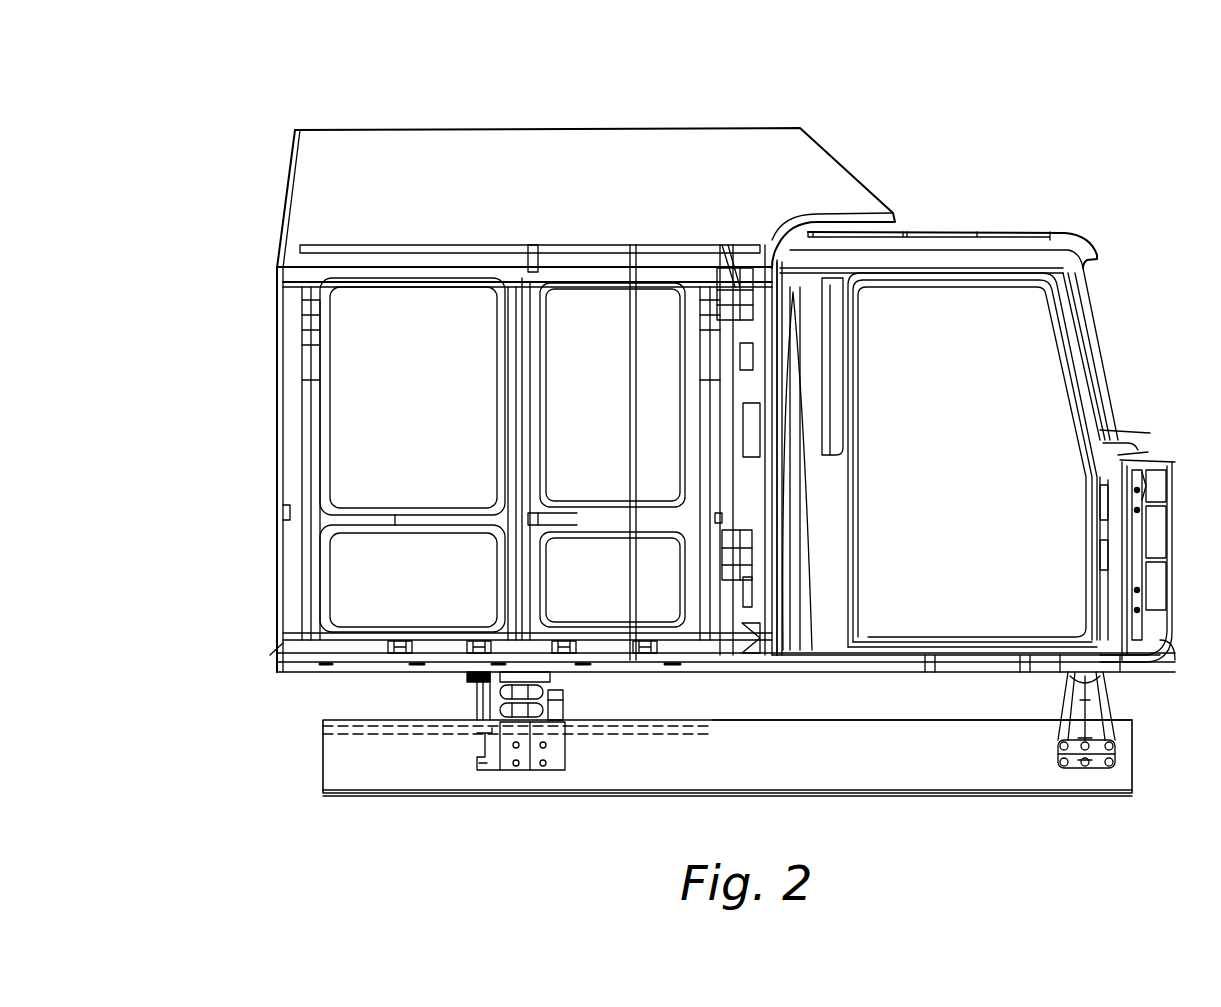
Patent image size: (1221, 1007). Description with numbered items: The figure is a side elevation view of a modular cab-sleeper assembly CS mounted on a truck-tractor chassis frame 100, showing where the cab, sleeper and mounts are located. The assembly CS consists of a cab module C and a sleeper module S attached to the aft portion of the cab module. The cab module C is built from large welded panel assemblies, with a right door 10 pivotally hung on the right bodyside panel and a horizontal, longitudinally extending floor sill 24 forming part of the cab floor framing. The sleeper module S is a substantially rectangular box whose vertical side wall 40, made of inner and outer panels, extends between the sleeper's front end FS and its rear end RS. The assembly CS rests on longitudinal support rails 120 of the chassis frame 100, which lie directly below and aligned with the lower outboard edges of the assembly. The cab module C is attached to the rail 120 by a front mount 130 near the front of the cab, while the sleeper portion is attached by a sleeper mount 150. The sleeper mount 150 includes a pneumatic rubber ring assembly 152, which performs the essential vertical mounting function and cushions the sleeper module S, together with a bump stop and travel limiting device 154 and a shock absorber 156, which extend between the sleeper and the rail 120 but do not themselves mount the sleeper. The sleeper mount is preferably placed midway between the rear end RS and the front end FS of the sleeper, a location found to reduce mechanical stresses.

The right door 10 is at (1176, 565).
The floor sills 24 is at (955, 660).
The side walls 40 is at (600, 392).
The chassis frame 100 is at (283, 827).
The support rails 120 is at (940, 782).
The front mount 130 is at (1103, 680).
The sleeper mount 150 is at (471, 744).
The pneumatic rubber ring assembly 152 is at (540, 712).
The bump stop and travel limiting device 154 is at (565, 678).
The shock absorber 156 is at (477, 700).
The sleeper module S is at (245, 168).
The cab module C is at (1093, 224).
The cab-sleeper assembly CS is at (302, 100).
The rear end of the sleeper RS is at (276, 640).
The front end of the sleeper FS is at (722, 504).